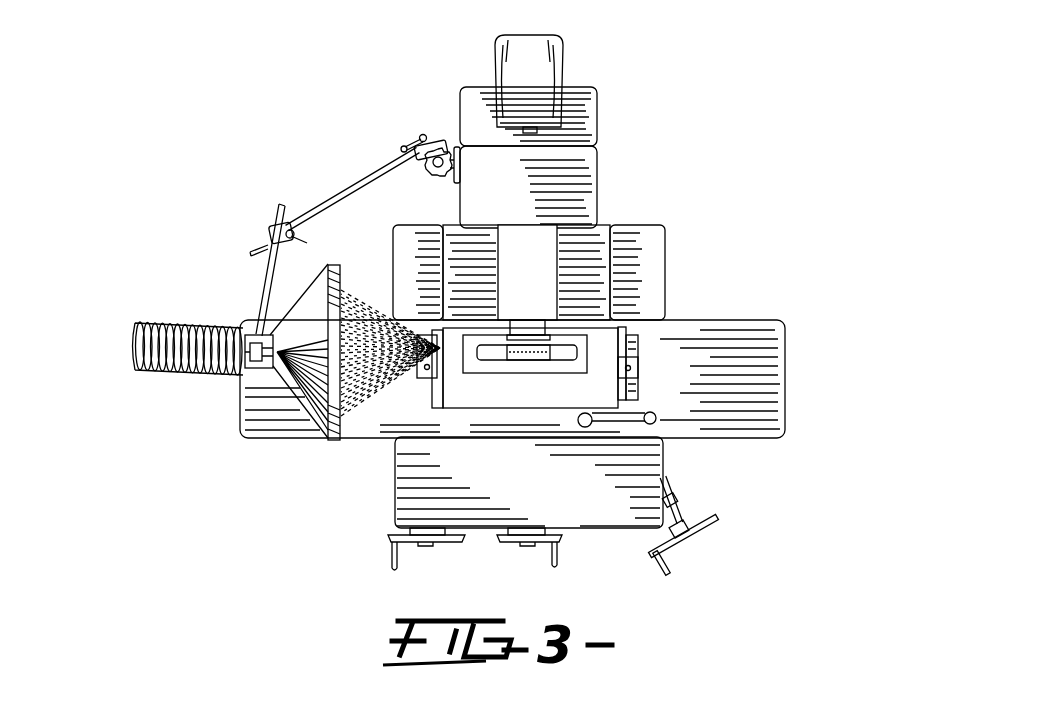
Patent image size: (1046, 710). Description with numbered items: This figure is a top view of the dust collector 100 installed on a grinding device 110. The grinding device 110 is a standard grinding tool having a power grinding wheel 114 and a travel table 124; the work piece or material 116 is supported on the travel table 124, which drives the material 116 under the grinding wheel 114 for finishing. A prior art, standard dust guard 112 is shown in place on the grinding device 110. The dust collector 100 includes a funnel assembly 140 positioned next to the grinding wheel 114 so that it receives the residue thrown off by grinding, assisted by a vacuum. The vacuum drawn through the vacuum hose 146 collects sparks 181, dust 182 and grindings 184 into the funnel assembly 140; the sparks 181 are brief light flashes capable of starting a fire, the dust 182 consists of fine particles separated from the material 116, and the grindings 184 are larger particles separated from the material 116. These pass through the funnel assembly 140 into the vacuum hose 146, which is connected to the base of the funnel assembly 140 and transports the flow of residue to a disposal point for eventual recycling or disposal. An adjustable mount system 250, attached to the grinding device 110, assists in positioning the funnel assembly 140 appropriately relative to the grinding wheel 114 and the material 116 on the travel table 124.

The grinding device 110 is at (633, 218).
The adjustable mount system 250 is at (357, 187).
The vacuum hose 146 is at (170, 330).
The funnel assembly 140 is at (273, 365).
The dust collector 100 is at (307, 280).
The sparks 181 is at (390, 360).
The dust 182 is at (300, 452).
The grindings 184 is at (298, 470).
The travel table 124 is at (703, 375).
The grinding wheel 114 is at (583, 356).
The dust guard 112 is at (497, 356).
The material 116 is at (588, 343).